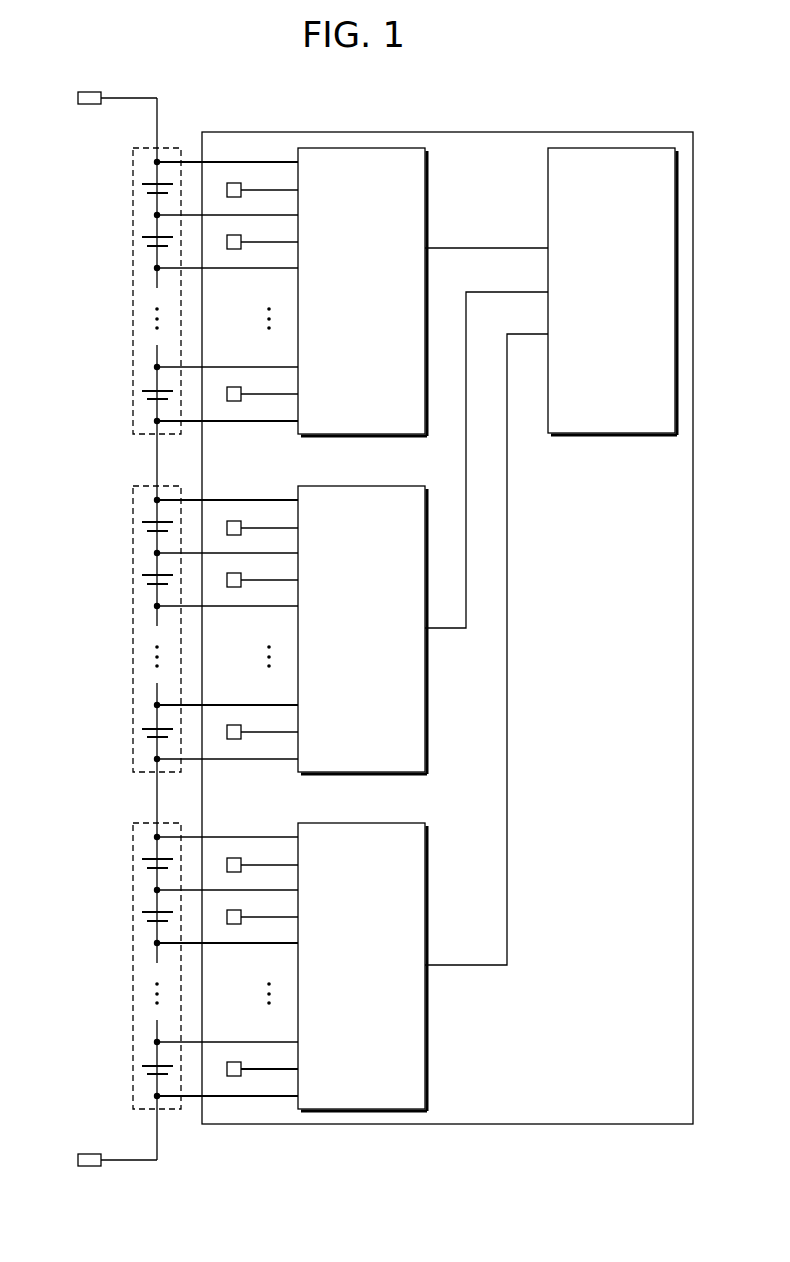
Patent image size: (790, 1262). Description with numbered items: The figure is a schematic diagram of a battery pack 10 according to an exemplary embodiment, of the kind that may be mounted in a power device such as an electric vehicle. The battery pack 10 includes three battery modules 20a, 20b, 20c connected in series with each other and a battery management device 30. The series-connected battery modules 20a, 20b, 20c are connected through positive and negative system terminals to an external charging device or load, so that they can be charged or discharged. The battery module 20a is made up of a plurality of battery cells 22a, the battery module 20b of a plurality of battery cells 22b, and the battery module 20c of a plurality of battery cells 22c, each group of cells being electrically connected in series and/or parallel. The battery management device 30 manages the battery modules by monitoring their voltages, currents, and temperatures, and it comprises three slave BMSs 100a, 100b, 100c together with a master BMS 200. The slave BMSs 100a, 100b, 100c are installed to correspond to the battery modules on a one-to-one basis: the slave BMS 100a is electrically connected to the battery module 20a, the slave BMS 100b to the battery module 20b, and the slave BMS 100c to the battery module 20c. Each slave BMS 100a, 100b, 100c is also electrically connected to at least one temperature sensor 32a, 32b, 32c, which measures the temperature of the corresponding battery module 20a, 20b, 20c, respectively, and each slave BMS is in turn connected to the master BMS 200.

The battery pack 10 is at (388, 78).
The battery management device 30 is at (447, 132).
The battery module 20a is at (133, 288).
The battery module 20b is at (133, 626).
The battery module 20c is at (133, 963).
The battery cells 22a is at (147, 391).
The battery cells 22b is at (147, 729).
The battery cells 22c is at (147, 1066).
The temperature sensor 32a is at (233, 401).
The temperature sensor 32b is at (233, 739).
The temperature sensor 32c is at (233, 1076).
The slave BMS 100a is at (425, 191).
The slave BMS 100b is at (425, 727).
The slave BMS 100c is at (425, 1037).
The master BMS 200 is at (613, 436).